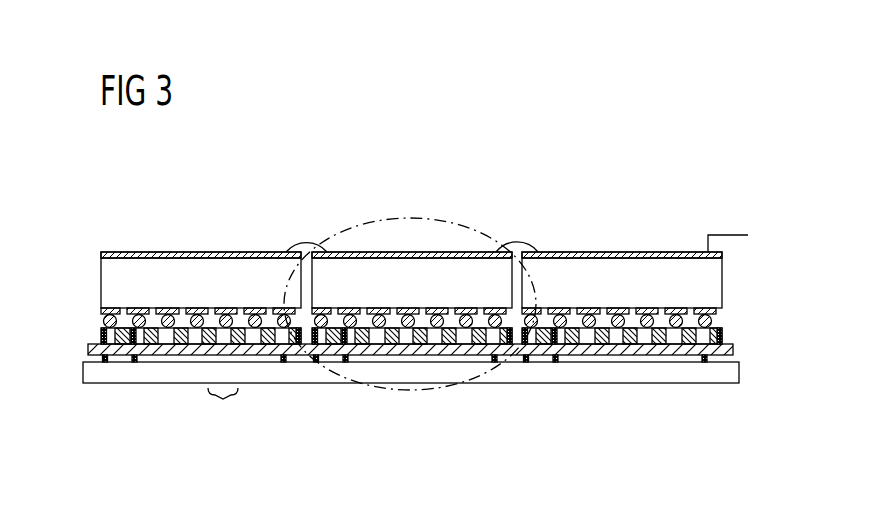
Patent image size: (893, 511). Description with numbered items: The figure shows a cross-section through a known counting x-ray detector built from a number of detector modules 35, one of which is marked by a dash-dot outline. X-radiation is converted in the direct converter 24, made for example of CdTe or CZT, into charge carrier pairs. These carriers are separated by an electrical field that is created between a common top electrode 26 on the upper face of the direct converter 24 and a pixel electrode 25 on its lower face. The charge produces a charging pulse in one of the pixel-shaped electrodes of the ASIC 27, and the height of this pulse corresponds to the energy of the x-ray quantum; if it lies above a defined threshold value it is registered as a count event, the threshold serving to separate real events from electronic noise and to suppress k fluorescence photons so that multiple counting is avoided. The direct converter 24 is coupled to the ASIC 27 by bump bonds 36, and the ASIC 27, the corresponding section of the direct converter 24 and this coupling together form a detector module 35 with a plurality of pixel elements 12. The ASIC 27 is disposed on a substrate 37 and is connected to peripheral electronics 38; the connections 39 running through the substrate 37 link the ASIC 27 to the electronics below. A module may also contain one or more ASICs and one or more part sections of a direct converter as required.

The pixel elements 12 is at (223, 408).
The direct converter 24 is at (112, 283).
The pixel electrode 25 is at (223, 336).
The common top electrode 26 is at (255, 255).
The ASIC 27 is at (722, 334).
The detector module 35 is at (421, 218).
The bump bonds 36 is at (102, 322).
The substrate 37 is at (732, 357).
The peripheral electronics 38 is at (645, 375).
The vias 39 is at (163, 402).